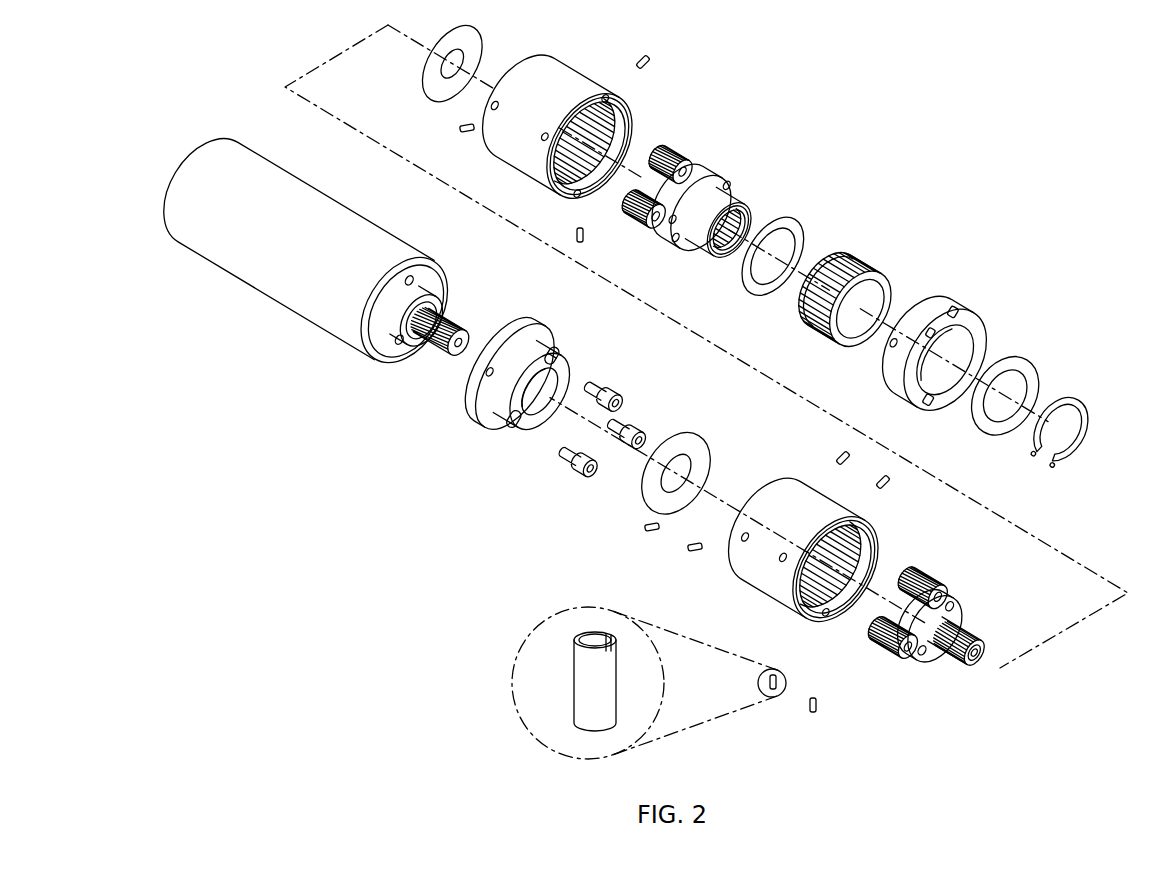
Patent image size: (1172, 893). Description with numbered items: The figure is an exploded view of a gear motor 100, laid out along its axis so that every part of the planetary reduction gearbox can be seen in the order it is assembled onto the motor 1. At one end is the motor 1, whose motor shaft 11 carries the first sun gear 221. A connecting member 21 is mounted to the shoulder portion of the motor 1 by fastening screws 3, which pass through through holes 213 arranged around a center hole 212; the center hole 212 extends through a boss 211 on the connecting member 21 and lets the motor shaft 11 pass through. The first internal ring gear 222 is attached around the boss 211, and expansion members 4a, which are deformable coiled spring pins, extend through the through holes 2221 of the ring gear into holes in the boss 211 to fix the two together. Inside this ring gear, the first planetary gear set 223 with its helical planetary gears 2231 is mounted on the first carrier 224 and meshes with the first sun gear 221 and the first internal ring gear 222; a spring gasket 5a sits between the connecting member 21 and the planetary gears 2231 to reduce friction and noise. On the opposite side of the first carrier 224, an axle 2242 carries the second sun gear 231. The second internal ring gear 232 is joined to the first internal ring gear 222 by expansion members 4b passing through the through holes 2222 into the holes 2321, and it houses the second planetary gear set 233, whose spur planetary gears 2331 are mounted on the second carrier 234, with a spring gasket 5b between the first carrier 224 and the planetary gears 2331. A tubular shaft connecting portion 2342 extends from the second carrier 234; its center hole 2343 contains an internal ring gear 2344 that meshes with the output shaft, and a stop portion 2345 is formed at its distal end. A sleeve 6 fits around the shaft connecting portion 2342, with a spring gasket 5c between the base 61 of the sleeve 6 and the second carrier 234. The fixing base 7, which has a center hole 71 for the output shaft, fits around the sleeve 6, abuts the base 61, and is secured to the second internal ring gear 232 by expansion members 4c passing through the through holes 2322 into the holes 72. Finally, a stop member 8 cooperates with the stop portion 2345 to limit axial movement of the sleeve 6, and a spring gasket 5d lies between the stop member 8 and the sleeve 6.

The gear motor 100 is at (820, 38).
The motor 1 is at (205, 245).
The motor shaft 11 is at (396, 320).
The first sun gear 221 is at (433, 348).
The connecting member 21 is at (494, 385).
The boss 211 is at (483, 388).
The center hole 212 is at (530, 405).
The through holes 213 is at (543, 340).
The fastening screws 3 is at (608, 390).
The spring gasket 5a is at (688, 455).
The spring gasket 5b is at (432, 70).
The spring gasket 5c is at (764, 292).
The spring gasket 5d is at (1024, 364).
The expansion members 4a is at (846, 456).
The expansion members 4b is at (890, 486).
The expansion members 4c is at (650, 58).
The first internal ring gear 222 is at (765, 537).
The through holes 2221 is at (735, 540).
The through holes 2222 is at (782, 556).
The first planetary gear set 223 is at (925, 639).
The planetary gears 2231 is at (930, 572).
The first carrier 224 is at (930, 668).
The second sun gear 231 is at (998, 653).
The axle 2242 is at (973, 664).
The second internal ring gear 232 is at (510, 121).
The holes 2321 is at (485, 106).
The through holes 2322 is at (547, 130).
The second planetary gear set 233 is at (734, 187).
The planetary gears 2331 is at (652, 150).
The second carrier 234 is at (734, 216).
The shaft connecting portion 2342 is at (762, 232).
The center hole 2343 is at (710, 258).
The internal ring gear 2344 is at (762, 246).
The stop portion 2345 is at (708, 244).
The sleeve 6 is at (854, 297).
The base 61 is at (830, 330).
The fixing base 7 is at (936, 344).
The center hole 71 is at (960, 340).
The holes 72 is at (892, 346).
The stop member 8 is at (1086, 410).